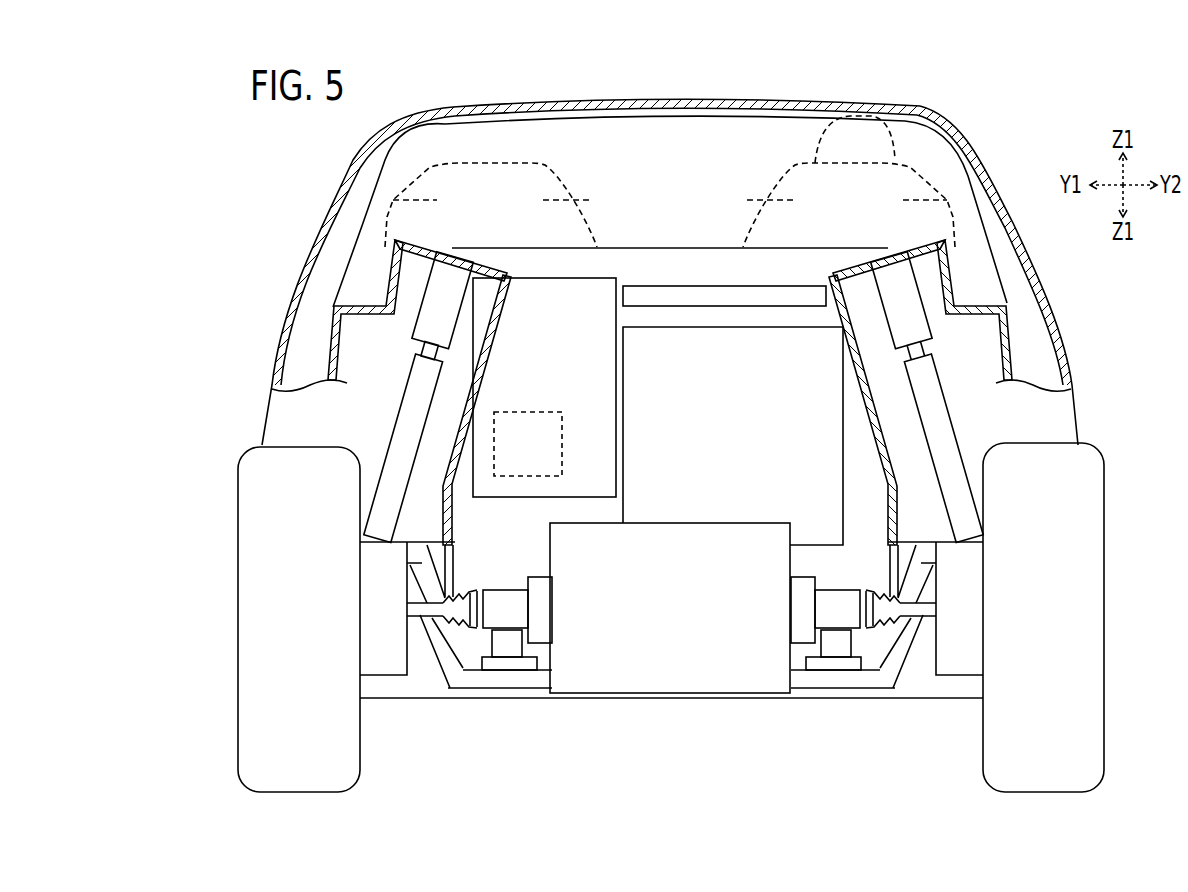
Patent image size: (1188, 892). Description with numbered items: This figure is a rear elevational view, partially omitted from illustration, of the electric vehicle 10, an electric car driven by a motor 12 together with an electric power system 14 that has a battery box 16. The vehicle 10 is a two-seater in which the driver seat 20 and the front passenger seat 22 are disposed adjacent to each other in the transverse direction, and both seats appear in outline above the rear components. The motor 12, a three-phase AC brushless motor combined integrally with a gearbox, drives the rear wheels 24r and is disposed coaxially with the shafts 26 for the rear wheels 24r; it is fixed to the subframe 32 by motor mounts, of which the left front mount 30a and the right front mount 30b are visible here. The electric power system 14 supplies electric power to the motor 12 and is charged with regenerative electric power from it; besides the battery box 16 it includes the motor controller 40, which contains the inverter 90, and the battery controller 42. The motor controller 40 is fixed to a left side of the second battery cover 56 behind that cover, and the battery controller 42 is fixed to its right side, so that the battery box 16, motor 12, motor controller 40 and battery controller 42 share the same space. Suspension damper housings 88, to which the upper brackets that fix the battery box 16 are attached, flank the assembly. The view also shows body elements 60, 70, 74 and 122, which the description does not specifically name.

The electric vehicle 10 is at (266, 162).
The motor 12 is at (698, 534).
The electric power system 14 is at (735, 178).
The battery box 16 is at (720, 259).
The driver seat 20 is at (918, 168).
The front passenger seat 22 is at (424, 172).
The rear wheels 24r is at (252, 528).
The shafts 26 is at (422, 617).
The left front mount 30a is at (507, 647).
The right front mount 30b is at (836, 647).
The subframe 32 is at (862, 680).
The motor controller 40 is at (593, 287).
The battery controller 42 is at (669, 352).
The second battery cover 56 is at (785, 267).
The roof side rail 60 is at (909, 112).
The side body panel 70 is at (280, 313).
The roof panel 74 is at (592, 128).
The suspension damper housings 88 is at (387, 273).
The inverter 90 is at (533, 418).
The bracket 122 is at (786, 306).